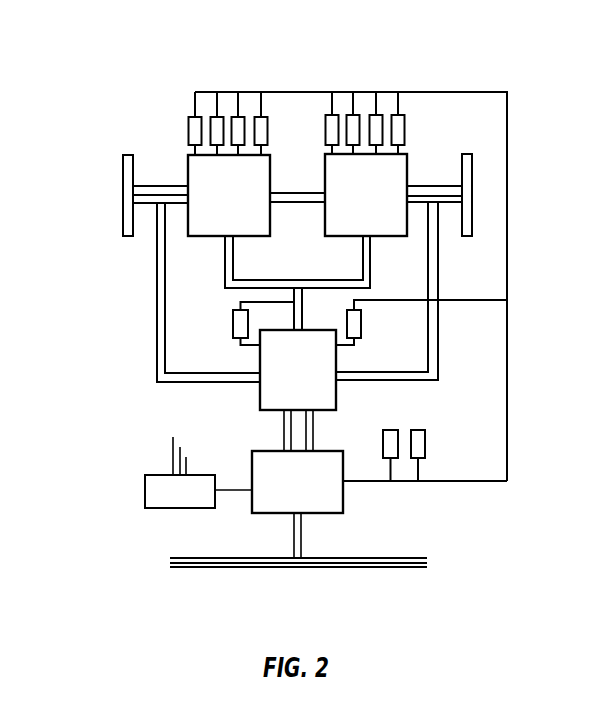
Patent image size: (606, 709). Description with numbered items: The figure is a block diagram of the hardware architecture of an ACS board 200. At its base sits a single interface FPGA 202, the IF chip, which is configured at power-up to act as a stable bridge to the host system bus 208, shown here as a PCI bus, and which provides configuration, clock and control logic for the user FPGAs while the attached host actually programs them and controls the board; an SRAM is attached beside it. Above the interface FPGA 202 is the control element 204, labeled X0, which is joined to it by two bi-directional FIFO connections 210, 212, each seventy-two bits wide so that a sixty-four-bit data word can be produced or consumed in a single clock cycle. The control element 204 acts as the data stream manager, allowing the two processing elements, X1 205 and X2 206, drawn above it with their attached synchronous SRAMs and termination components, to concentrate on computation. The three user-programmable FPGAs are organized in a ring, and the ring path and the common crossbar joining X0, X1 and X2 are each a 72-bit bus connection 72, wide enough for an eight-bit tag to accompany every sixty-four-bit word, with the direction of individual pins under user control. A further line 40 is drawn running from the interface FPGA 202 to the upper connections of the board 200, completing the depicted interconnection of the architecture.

The ACS board 200 is at (100, 88).
The processing element X1 205 is at (187, 158).
The processing element X2 206 is at (408, 158).
The 72-bit bus connection 72 is at (278, 292).
The control element X0 204 is at (338, 390).
The FIFO connection 210 is at (283, 439).
The FIFO connection 212 is at (314, 440).
The interface FPGA 202 is at (330, 514).
The host system bus 208 is at (193, 558).
The signal line 40 is at (458, 493).